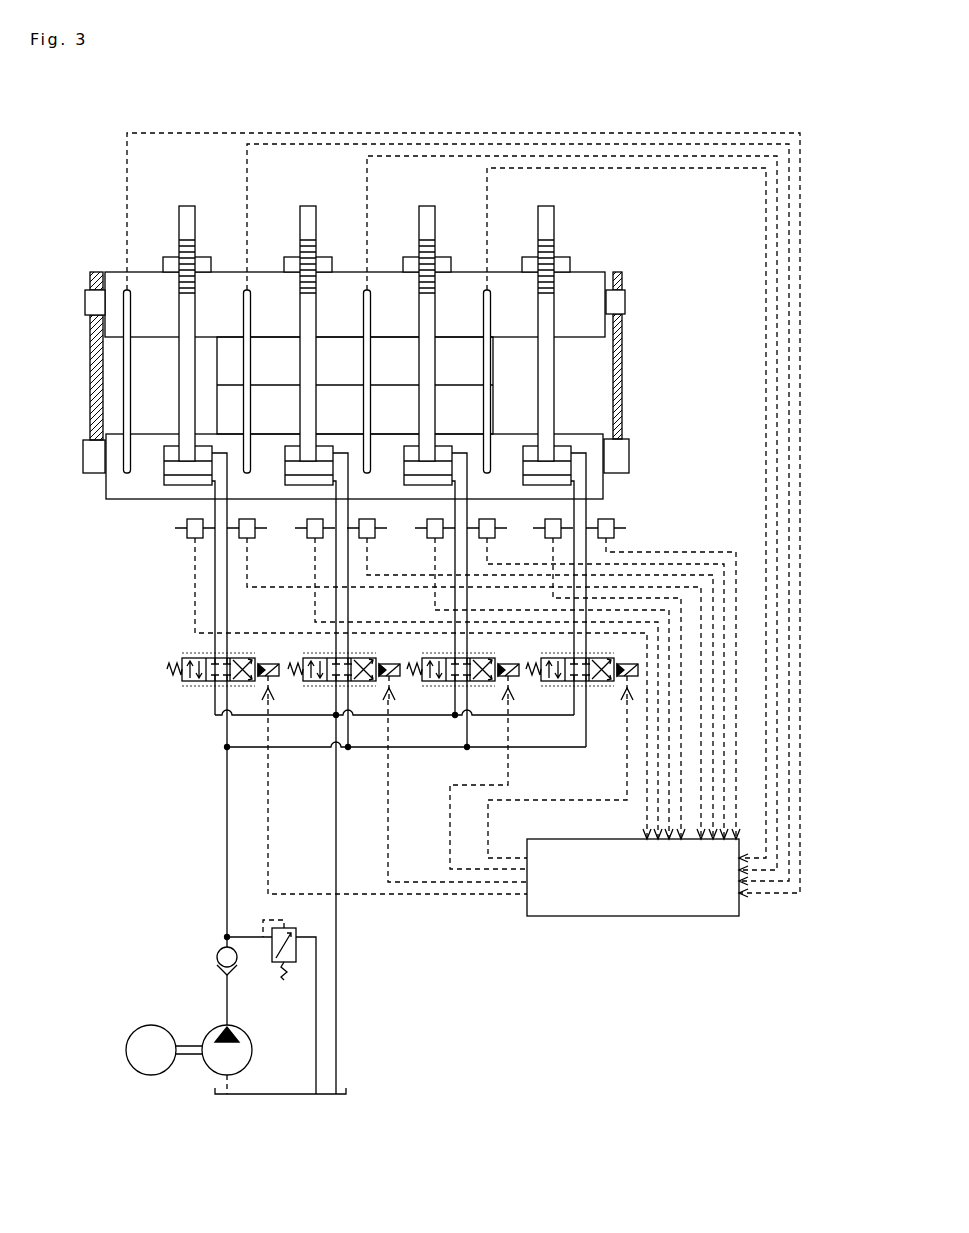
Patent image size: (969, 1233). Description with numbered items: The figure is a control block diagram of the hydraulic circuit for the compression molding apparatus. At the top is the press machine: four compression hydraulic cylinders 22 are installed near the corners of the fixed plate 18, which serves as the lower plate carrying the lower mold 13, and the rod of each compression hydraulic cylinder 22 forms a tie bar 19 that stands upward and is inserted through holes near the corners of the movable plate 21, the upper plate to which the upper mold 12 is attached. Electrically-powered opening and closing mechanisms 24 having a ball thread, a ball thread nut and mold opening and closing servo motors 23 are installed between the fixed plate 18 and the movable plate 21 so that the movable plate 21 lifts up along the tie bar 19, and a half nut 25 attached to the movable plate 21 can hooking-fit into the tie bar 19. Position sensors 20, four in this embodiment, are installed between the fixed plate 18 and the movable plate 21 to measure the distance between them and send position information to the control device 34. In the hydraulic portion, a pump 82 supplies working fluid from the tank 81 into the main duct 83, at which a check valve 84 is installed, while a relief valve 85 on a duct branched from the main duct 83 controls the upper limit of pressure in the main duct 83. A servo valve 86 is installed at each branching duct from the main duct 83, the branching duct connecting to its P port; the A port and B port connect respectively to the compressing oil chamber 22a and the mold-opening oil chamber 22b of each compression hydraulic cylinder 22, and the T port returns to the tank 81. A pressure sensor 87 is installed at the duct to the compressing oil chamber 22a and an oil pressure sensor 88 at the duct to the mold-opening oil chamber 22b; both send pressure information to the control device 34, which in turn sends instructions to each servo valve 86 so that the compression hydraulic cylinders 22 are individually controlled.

The upper mold 12 is at (462, 365).
The lower mold 13 is at (462, 410).
The fixed plate 18 is at (112, 477).
The tie bar 19 is at (183, 215).
The position sensor 20 is at (124, 347).
The movable plate 21 is at (112, 277).
The compression hydraulic cylinder 22 is at (333, 526).
The compressing oil chamber 22a is at (168, 451).
The mold-opening oil chamber 22b is at (175, 482).
The mold opening and closing servo motor 23 is at (84, 448).
The electrically-powered opening and closing mechanism 24 is at (88, 397).
The half nut 25 is at (168, 260).
The control device 34 is at (643, 887).
The tank 81 is at (352, 1089).
The pump 82 is at (210, 1036).
The main duct 83 is at (227, 997).
The check valve 84 is at (215, 960).
The relief valve 85 is at (296, 950).
The servo valve 86 is at (203, 683).
The pressure sensor 87 is at (255, 528).
The oil pressure sensor 88 is at (185, 528).